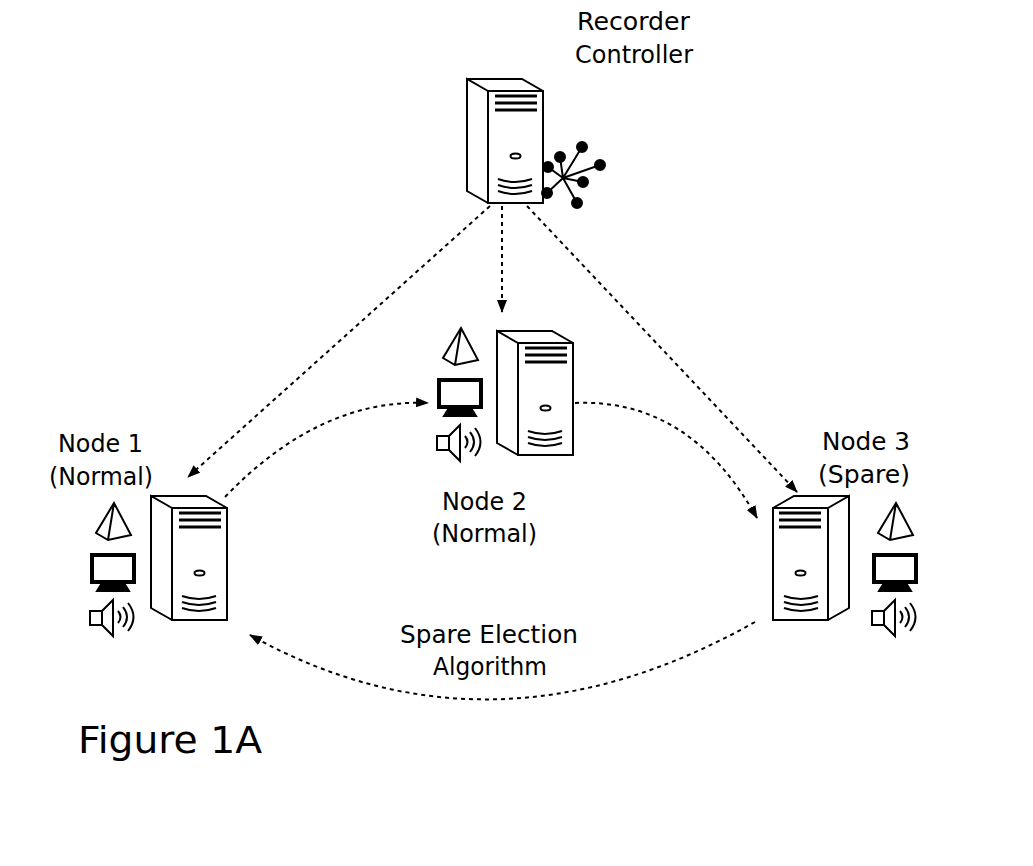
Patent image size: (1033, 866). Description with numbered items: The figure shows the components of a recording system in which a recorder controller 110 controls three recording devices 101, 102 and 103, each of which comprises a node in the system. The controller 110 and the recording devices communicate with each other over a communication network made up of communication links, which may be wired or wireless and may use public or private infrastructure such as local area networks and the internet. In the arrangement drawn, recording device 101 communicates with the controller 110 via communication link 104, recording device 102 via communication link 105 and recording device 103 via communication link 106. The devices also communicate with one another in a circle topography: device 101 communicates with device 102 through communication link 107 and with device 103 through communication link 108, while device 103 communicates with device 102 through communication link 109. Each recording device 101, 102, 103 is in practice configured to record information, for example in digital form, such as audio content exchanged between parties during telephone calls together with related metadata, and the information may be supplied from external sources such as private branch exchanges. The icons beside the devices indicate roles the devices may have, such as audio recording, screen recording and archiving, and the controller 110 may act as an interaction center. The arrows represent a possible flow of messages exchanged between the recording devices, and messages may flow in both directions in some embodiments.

The recorder controller 110 is at (467, 113).
The recording device 101 is at (225, 561).
The recording device 102 is at (573, 390).
The recording device 103 is at (776, 563).
The communication link 104 is at (333, 345).
The communication link 105 is at (505, 294).
The communication link 106 is at (629, 315).
The communication link 107 is at (313, 437).
The communication link 108 is at (650, 673).
The communication link 109 is at (687, 437).